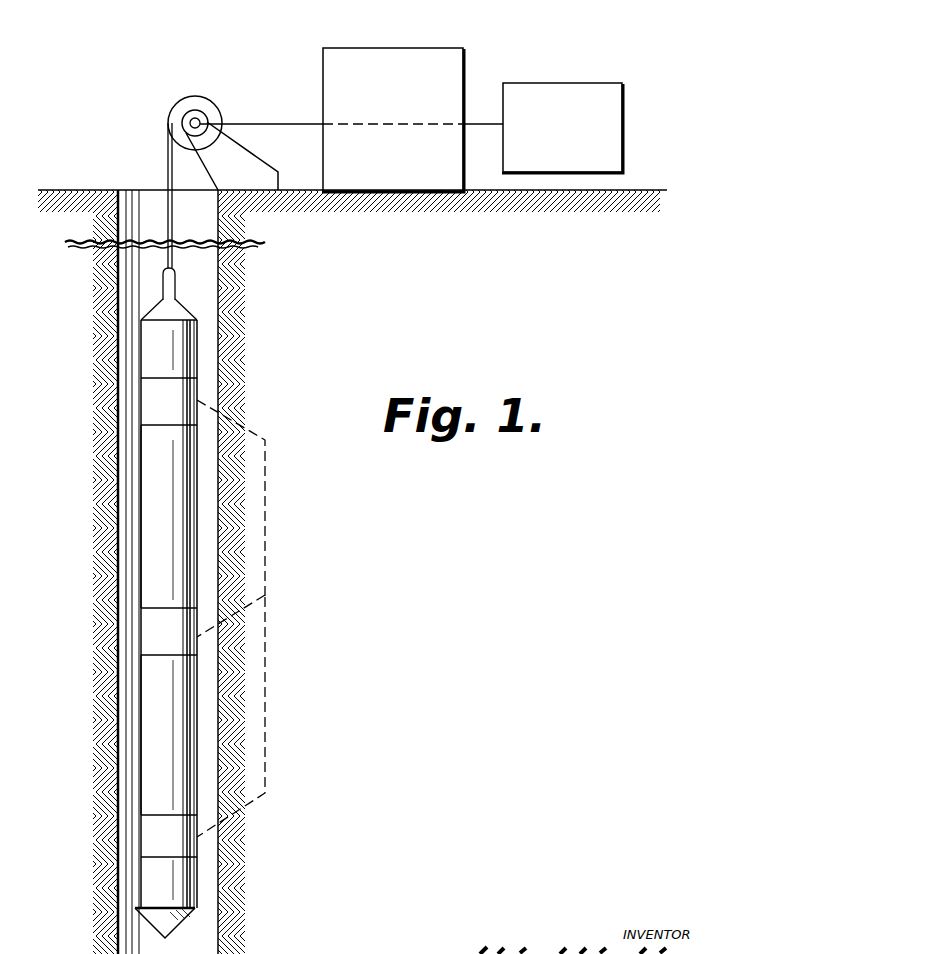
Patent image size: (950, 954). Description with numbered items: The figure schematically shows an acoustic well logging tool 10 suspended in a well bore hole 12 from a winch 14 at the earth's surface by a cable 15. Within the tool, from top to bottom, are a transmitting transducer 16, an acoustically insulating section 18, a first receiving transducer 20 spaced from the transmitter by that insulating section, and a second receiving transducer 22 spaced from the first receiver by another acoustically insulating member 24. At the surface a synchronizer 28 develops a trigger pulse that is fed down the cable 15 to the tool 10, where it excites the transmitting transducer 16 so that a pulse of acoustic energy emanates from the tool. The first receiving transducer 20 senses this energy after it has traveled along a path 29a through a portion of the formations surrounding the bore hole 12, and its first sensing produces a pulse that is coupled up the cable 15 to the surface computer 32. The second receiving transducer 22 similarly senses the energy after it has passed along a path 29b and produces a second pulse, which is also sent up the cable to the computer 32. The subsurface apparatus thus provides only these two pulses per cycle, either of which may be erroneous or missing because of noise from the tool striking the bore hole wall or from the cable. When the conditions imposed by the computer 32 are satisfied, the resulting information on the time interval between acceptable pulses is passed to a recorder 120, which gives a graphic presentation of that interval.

The acoustic well logging tool 10 is at (176, 603).
The well bore hole 12 is at (222, 370).
The winch 14 is at (245, 177).
The cable 15 is at (167, 162).
The transmitting transducer 16 is at (137, 408).
The acoustically insulating section 18 is at (160, 518).
The first receiving transducer 20 is at (140, 632).
The second receiving transducer 22 is at (140, 835).
The acoustically insulating member 24 is at (150, 745).
The synchronizer 28 is at (424, 48).
The acoustic energy path 29a is at (268, 565).
The acoustic energy path 29b is at (268, 740).
The computer 32 is at (433, 183).
The recorder 120 is at (573, 83).